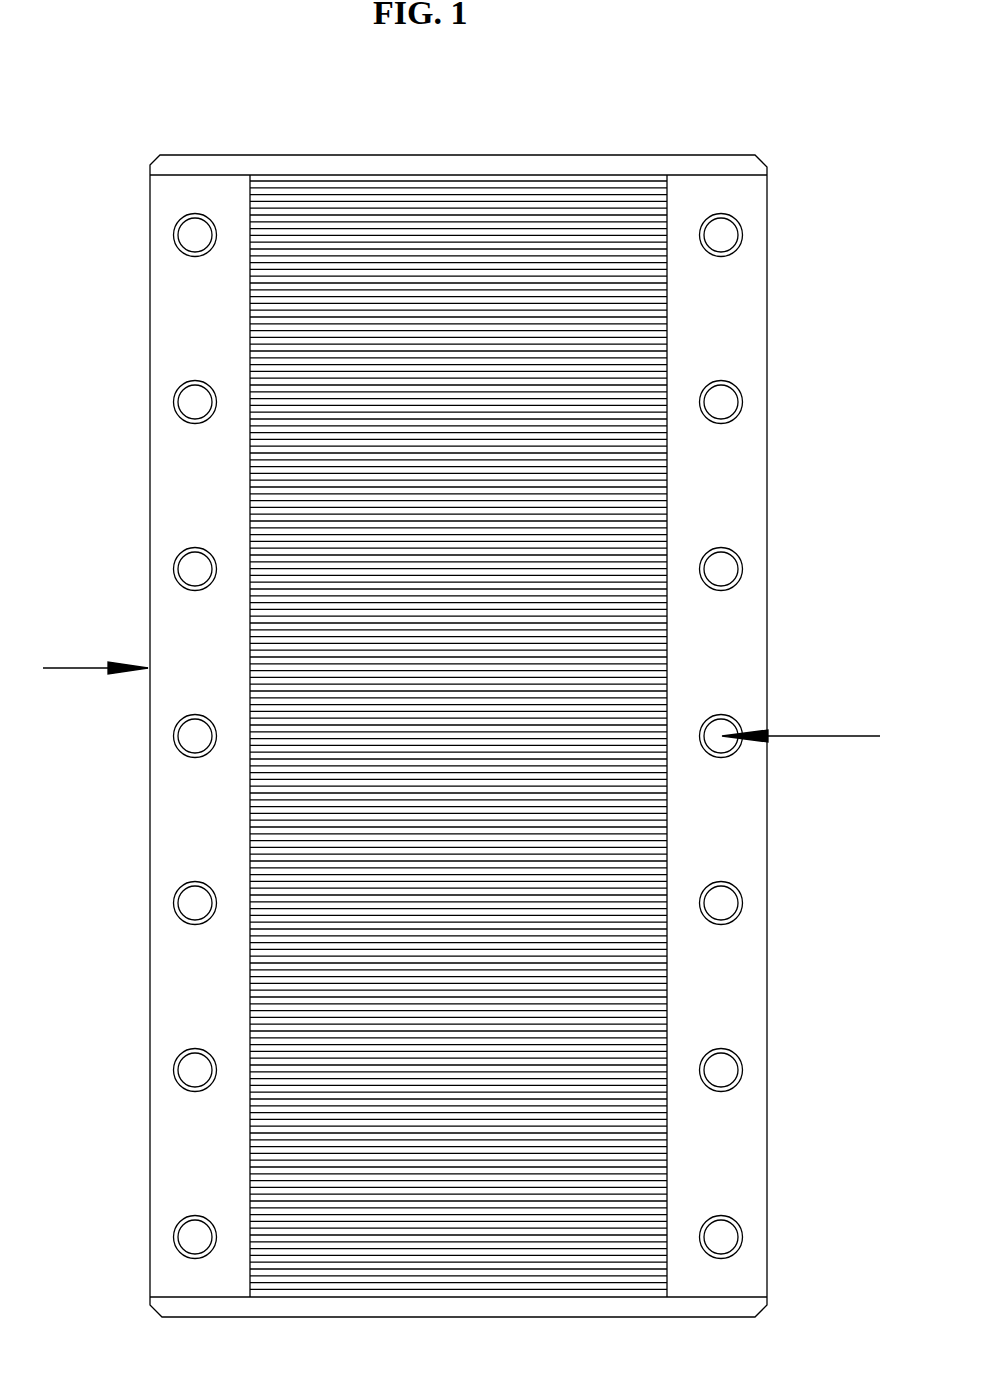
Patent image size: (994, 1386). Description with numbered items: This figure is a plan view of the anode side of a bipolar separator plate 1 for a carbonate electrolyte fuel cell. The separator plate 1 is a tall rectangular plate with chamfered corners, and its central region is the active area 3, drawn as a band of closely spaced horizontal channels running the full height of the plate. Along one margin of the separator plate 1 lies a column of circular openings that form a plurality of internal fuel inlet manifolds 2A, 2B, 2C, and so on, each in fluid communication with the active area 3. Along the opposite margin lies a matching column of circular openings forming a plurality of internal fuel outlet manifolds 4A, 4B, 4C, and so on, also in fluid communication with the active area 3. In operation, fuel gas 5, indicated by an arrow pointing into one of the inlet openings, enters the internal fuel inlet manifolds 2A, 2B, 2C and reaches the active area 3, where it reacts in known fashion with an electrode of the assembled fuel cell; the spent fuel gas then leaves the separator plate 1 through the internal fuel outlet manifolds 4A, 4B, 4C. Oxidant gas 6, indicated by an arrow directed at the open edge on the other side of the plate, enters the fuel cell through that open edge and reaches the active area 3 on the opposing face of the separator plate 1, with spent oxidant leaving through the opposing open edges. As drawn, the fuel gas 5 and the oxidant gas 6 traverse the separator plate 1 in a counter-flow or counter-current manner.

The bipolar separator plate 1 is at (765, 162).
The internal fuel inlet manifold 2A is at (745, 232).
The internal fuel inlet manifold 2B is at (745, 400).
The internal fuel inlet manifold 2C is at (745, 567).
The active area 3 is at (485, 297).
The internal fuel outlet manifold 4A is at (173, 225).
The internal fuel outlet manifold 4B is at (173, 395).
The internal fuel outlet manifold 4C is at (173, 563).
The fuel gas 5 is at (827, 738).
The oxidant gas 6 is at (87, 668).